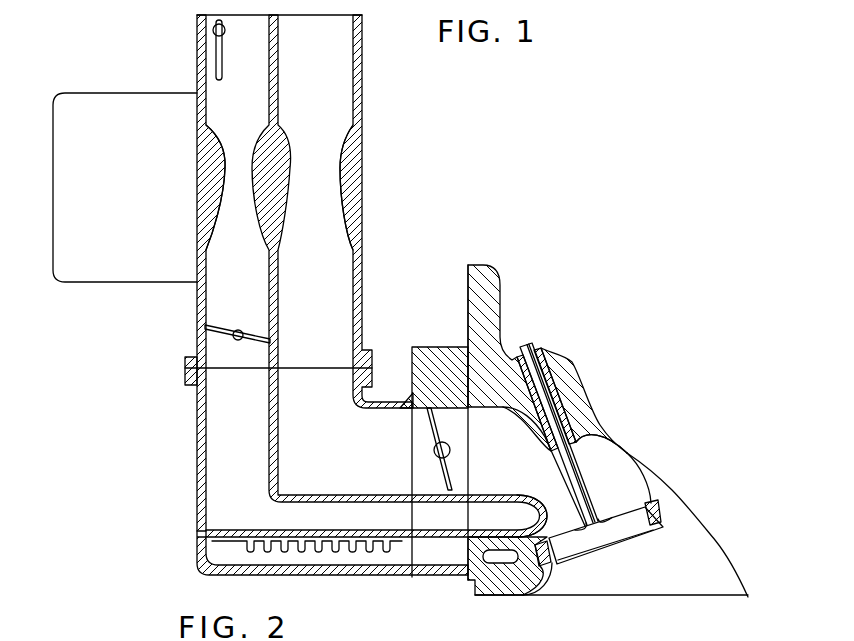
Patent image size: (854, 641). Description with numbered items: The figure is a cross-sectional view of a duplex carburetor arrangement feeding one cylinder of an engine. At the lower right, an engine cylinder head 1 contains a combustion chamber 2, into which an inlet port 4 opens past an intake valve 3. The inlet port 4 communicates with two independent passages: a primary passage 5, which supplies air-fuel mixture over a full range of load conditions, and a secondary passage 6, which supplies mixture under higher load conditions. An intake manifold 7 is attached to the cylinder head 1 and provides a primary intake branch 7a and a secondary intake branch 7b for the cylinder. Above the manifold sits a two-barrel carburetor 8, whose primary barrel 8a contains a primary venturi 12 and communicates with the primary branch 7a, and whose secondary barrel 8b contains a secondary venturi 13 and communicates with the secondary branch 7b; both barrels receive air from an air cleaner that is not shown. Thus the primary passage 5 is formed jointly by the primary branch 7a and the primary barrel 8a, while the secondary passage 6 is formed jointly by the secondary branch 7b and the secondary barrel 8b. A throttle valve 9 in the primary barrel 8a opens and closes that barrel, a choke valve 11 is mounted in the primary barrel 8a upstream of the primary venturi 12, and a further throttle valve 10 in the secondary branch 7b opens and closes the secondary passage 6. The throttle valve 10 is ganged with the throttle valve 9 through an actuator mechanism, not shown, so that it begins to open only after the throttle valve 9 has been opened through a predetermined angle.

The engine cylinder head 1 is at (507, 593).
The combustion chamber 2 is at (633, 590).
The intake valve 3 is at (600, 503).
The inlet port 4 is at (605, 438).
The primary passage 5 is at (440, 517).
The secondary passage 6 is at (423, 444).
The intake manifold 7 is at (197, 460).
The primary intake branch 7a is at (252, 515).
The secondary intake branch 7b is at (355, 459).
The duplex carburetor 8 is at (153, 92).
The primary barrel 8a is at (257, 269).
The secondary barrel 8b is at (330, 269).
The throttle valve 9 is at (208, 334).
The throttle valve 10 is at (446, 400).
The choke valve 11 is at (217, 52).
The primary venturi 12 is at (221, 148).
The secondary venturi 13 is at (342, 147).